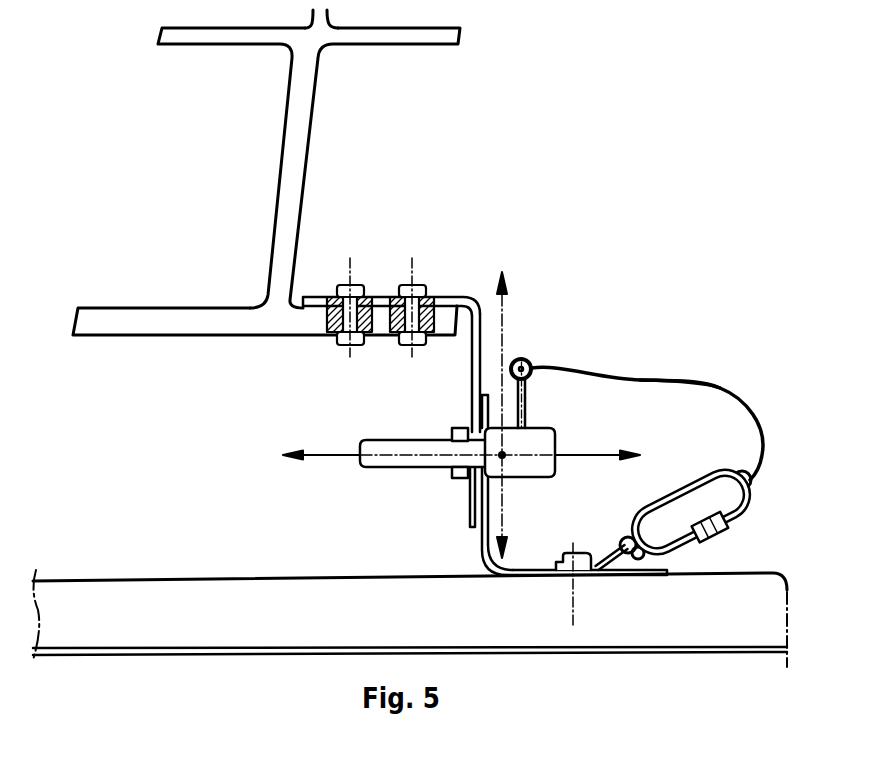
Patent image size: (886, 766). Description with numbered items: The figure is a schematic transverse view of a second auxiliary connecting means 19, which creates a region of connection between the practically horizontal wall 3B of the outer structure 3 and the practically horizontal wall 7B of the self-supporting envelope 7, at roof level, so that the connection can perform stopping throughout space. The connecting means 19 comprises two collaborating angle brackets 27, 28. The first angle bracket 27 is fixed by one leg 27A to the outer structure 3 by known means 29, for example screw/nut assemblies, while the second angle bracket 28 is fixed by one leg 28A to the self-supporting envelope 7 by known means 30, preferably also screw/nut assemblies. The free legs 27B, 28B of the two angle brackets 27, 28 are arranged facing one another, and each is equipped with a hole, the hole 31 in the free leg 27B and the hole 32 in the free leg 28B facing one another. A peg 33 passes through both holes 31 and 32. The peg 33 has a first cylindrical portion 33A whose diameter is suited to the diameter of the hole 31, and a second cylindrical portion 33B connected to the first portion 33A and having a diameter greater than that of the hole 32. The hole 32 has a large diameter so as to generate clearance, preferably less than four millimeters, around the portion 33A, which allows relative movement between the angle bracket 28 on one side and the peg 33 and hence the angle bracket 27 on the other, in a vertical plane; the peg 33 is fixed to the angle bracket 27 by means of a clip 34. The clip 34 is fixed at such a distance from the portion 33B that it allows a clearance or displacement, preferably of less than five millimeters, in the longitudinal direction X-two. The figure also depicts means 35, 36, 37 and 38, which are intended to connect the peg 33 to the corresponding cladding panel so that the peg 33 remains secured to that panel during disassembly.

The outer structure 3 is at (266, 213).
The practically horizontal wall of the outer structure 3B is at (123, 330).
The self-supporting envelope 7 is at (410, 661).
The practically horizontal wall of the self-supporting envelope 7B is at (220, 630).
The auxiliary connecting means 19 is at (575, 262).
The angle bracket 27 is at (391, 356).
The leg of angle bracket 27A is at (378, 298).
The free leg of angle bracket 27B is at (468, 502).
The angle bracket 28 is at (539, 518).
The leg of angle bracket 28A is at (640, 576).
The free leg of angle bracket 28B is at (487, 500).
The known fixing means 29 is at (342, 278).
The known fixing means 30 is at (580, 577).
The hole 31 is at (447, 453).
The hole 32 is at (490, 445).
The peg 33 is at (456, 458).
The first cylindrical portion 33A is at (368, 470).
The second cylindrical portion 33B is at (558, 468).
The clip 34 is at (434, 434).
The connecting means 35 is at (660, 384).
The connecting means 36 is at (522, 403).
The connecting means 37 is at (730, 382).
The connecting means 38 is at (742, 527).